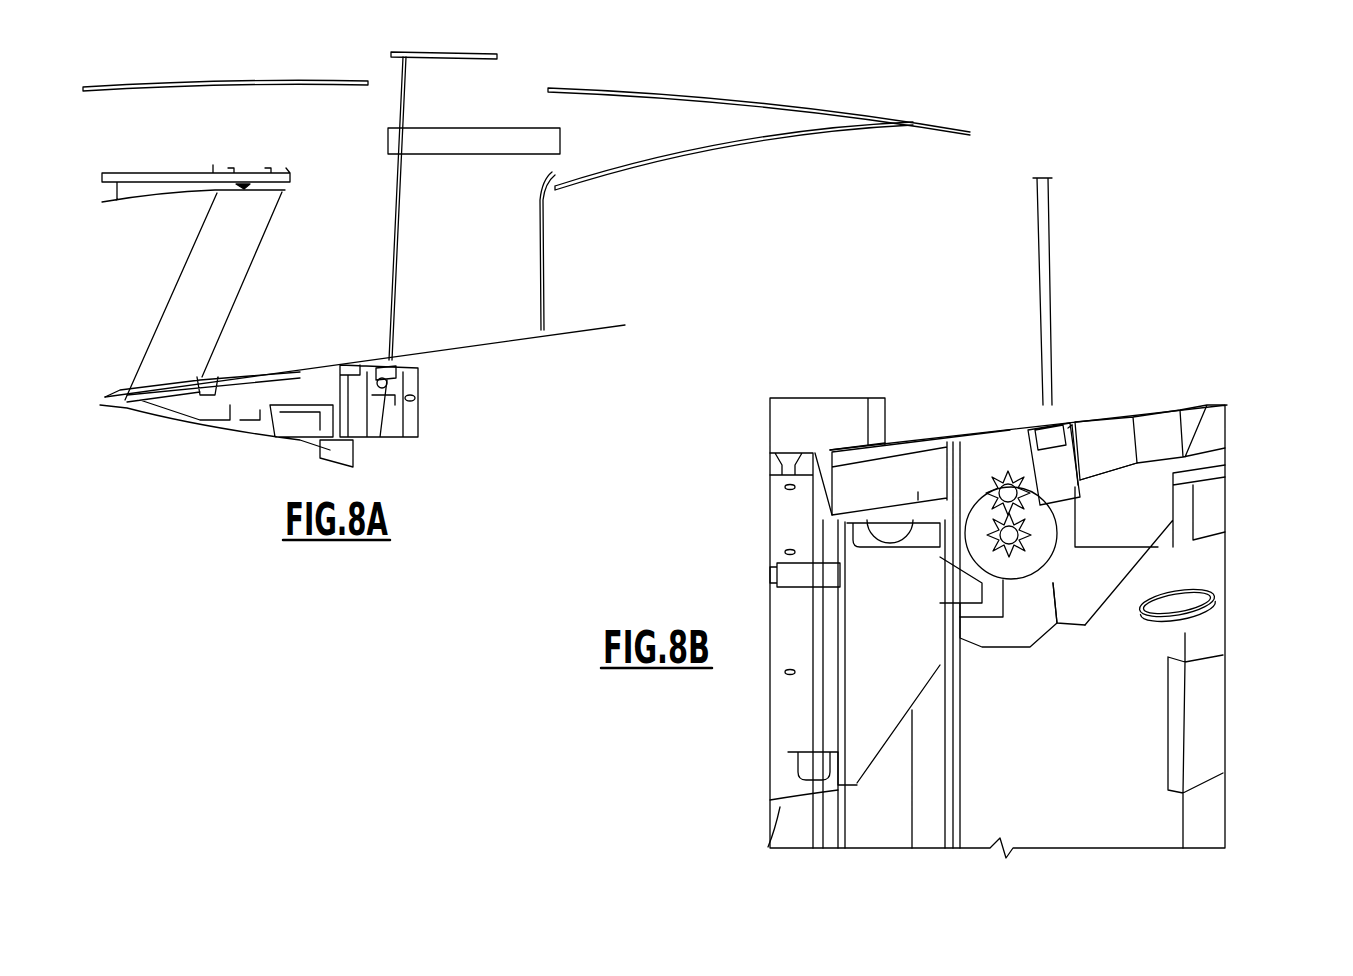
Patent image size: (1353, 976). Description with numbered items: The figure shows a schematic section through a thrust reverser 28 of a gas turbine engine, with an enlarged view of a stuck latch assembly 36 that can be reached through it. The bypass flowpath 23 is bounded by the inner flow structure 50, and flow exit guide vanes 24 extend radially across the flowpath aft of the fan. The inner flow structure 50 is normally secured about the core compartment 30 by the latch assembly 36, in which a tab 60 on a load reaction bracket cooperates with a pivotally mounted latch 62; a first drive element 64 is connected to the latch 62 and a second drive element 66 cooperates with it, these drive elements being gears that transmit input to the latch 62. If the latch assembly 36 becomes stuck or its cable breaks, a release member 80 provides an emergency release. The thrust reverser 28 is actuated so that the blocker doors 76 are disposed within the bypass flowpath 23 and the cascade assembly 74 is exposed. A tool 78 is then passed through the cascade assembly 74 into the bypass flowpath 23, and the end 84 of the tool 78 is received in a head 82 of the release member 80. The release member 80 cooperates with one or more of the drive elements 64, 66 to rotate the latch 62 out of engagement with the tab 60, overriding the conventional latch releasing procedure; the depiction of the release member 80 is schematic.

In FIG. 8A, the bypass flowpath 23 is at (322, 297).
In FIG. 8B, the bypass flowpath 23 is at (955, 411).
In FIG. 8A, the flow exit guide vanes 24 is at (190, 285).
In FIG. 8A, the thrust reverser 28 is at (596, 70).
In FIG. 8B, the core compartment 30 is at (1120, 792).
In FIG. 8A, the latch assembly 36 is at (405, 406).
In FIG. 8B, the latch assembly 36 is at (1068, 655).
In FIG. 8B, the inner flow structure 50 is at (1122, 414).
In FIG. 8B, the tab 60 is at (968, 620).
In FIG. 8B, the latch 62 is at (1003, 637).
In FIG. 8B, the first drive element 64 is at (1012, 545).
In FIG. 8B, the second drive element 66 is at (1002, 480).
In FIG. 8A, the cascade assembly 74 is at (484, 143).
In FIG. 8A, the blocker doors 76 is at (546, 278).
In FIG. 8A, the tool 78 is at (395, 227).
In FIG. 8B, the tool 78 is at (1043, 263).
In FIG. 8A, the release member 80 is at (395, 369).
In FIG. 8B, the release member 80 is at (1113, 455).
In FIG. 8B, the head 82 is at (1075, 420).
In FIG. 8B, the end 84 is at (1047, 417).